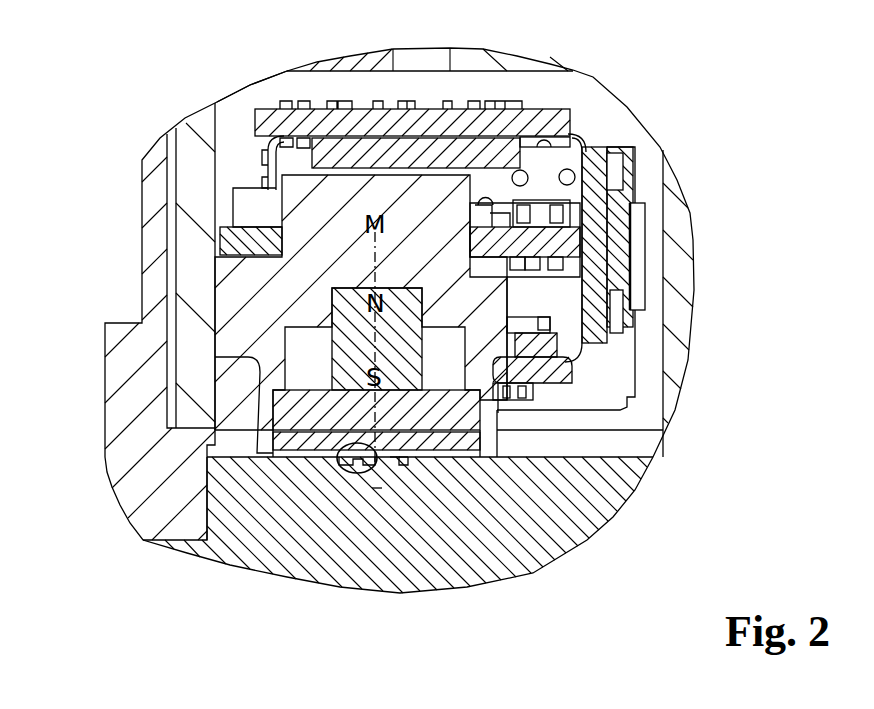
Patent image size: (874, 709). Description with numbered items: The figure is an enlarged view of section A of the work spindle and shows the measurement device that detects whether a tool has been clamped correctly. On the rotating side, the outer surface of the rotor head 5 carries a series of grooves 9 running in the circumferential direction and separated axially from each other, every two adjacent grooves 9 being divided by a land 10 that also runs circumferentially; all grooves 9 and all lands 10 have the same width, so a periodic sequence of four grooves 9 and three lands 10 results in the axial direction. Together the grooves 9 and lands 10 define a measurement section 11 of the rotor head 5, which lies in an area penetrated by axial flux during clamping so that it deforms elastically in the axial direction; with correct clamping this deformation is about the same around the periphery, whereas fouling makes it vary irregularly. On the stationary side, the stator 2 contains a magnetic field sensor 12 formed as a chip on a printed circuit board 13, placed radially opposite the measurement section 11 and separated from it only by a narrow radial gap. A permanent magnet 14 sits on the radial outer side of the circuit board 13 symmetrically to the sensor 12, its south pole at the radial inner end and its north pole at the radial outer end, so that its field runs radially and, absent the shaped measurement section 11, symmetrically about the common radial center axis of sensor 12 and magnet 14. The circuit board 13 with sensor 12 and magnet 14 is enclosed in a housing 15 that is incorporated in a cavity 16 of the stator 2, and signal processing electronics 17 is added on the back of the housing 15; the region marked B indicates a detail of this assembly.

The stator 2 is at (677, 275).
The rotor head 5 is at (593, 519).
The grooves 9 is at (410, 460).
The lands 10 is at (400, 458).
The measurement section 11 is at (382, 500).
The magnetic field sensor 12 is at (335, 432).
The printed circuit board 13 is at (282, 412).
The permanent magnet 14 is at (337, 310).
The housing 15 is at (247, 281).
The cavity 16 is at (228, 172).
The signal processing electronics 17 is at (297, 117).
The section A is at (223, 92).
The detail region B is at (353, 473).